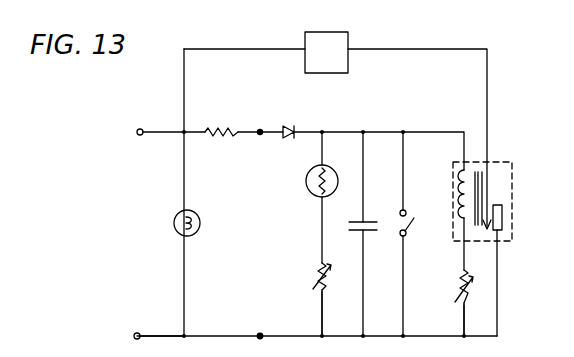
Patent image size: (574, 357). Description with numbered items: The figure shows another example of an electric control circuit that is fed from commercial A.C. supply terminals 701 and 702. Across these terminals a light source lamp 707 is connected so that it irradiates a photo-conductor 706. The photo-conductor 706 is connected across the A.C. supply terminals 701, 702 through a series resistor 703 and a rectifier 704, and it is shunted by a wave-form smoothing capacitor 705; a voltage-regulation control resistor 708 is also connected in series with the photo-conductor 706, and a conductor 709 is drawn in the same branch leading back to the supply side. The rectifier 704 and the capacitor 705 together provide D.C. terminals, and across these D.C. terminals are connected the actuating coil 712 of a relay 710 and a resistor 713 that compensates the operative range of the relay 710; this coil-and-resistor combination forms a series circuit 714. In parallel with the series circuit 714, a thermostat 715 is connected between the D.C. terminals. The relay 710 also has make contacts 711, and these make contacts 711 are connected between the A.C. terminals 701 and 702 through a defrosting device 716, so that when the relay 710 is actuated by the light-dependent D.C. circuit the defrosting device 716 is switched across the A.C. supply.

The A.C. supply terminal 701 is at (139, 133).
The A.C. supply terminal 702 is at (138, 338).
The series resistor 703 is at (222, 125).
The rectifier 704 is at (289, 125).
The wave-form smoothing capacitor 705 is at (366, 234).
The photo-conductor 706 is at (306, 178).
The light source lamp 707 is at (194, 216).
The voltage-regulation control resistor 708 is at (315, 279).
The conductor 709 is at (320, 316).
The relay 710 is at (502, 164).
The make contacts 711 is at (498, 205).
The actuating coil 712 is at (461, 218).
The resistor 713 is at (457, 287).
The series circuit 714 is at (462, 326).
The thermostat 715 is at (406, 211).
The defrosting device 716 is at (305, 40).